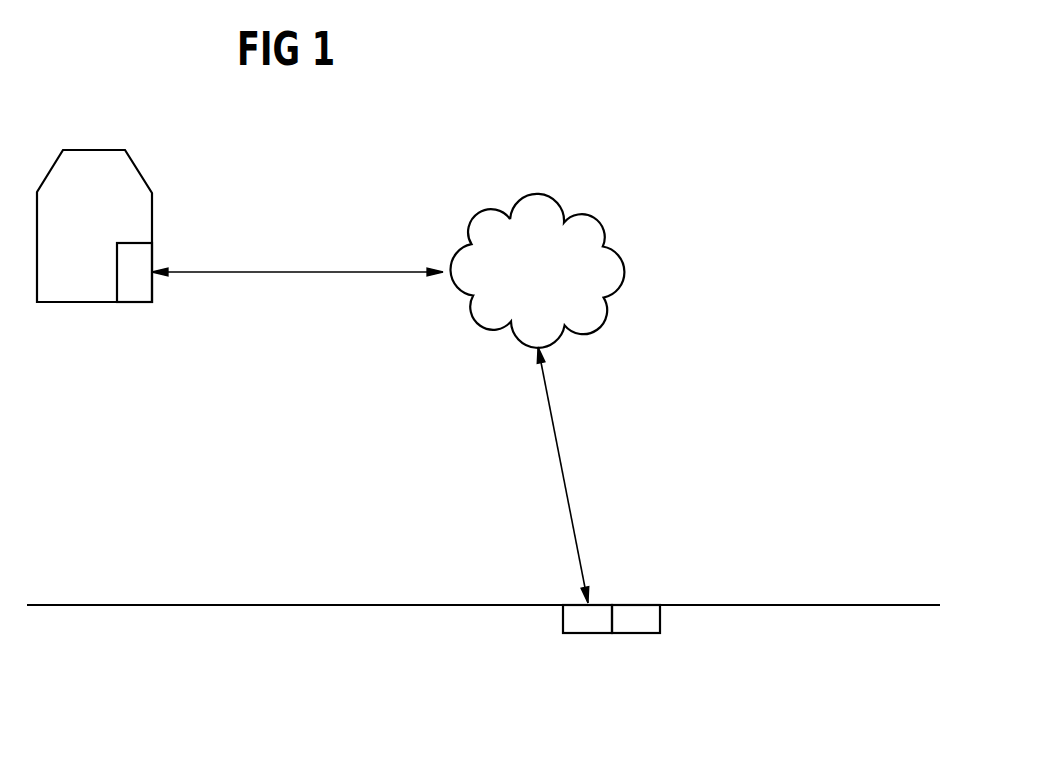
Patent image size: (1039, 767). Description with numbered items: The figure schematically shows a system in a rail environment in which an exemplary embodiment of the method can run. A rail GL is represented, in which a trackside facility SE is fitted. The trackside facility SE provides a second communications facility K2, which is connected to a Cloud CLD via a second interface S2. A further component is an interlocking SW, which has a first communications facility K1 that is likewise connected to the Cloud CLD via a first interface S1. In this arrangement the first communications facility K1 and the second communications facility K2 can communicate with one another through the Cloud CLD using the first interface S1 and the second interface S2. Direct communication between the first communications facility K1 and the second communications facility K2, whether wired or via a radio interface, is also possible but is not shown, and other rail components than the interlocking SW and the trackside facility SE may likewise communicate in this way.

The interlocking SW is at (160, 170).
The first communications facility K1 is at (135, 292).
The Cloud CLD is at (607, 227).
The first interface S1 is at (300, 272).
The second interface S2 is at (562, 473).
The rail GL is at (863, 605).
The second communications facility K2 is at (587, 623).
The trackside facility SE is at (640, 644).